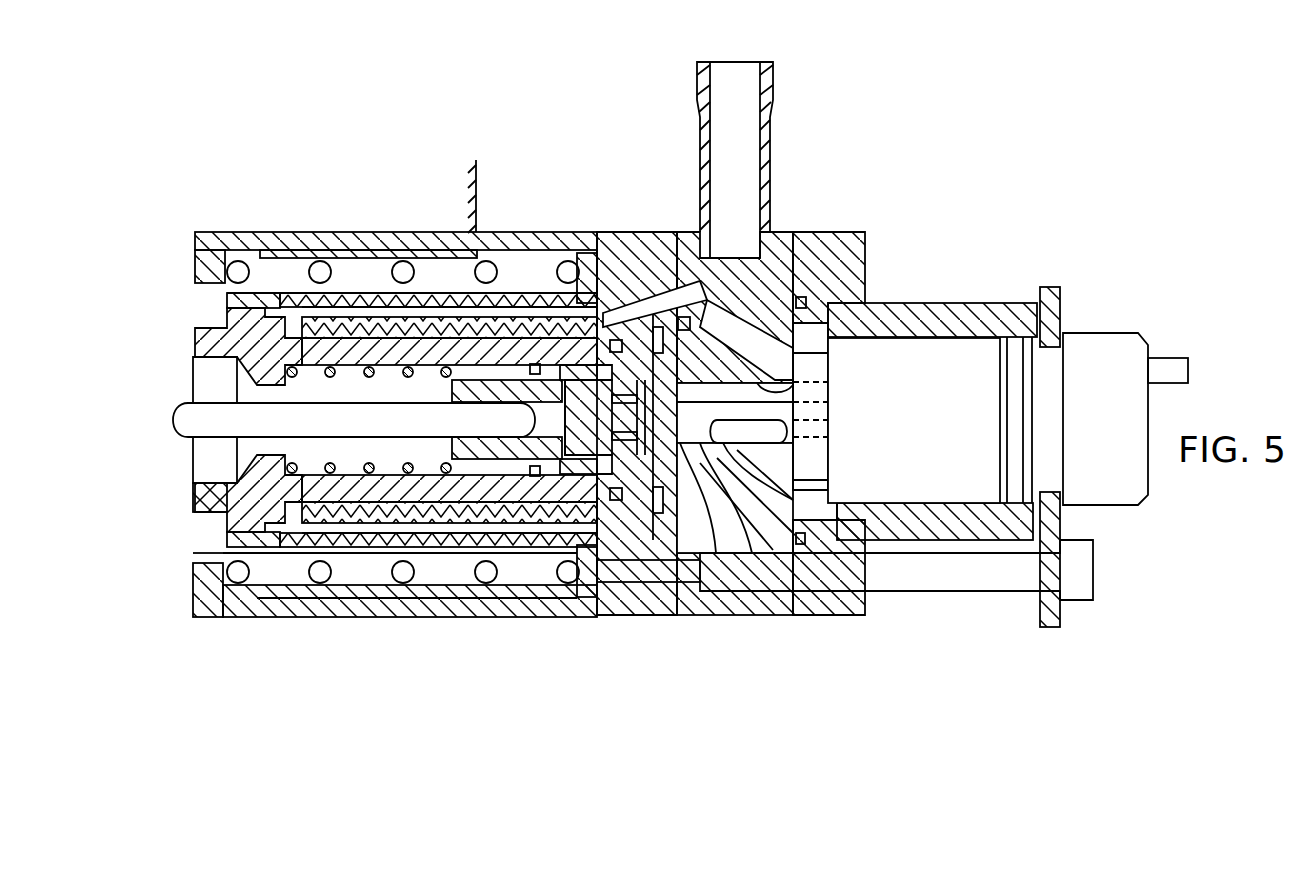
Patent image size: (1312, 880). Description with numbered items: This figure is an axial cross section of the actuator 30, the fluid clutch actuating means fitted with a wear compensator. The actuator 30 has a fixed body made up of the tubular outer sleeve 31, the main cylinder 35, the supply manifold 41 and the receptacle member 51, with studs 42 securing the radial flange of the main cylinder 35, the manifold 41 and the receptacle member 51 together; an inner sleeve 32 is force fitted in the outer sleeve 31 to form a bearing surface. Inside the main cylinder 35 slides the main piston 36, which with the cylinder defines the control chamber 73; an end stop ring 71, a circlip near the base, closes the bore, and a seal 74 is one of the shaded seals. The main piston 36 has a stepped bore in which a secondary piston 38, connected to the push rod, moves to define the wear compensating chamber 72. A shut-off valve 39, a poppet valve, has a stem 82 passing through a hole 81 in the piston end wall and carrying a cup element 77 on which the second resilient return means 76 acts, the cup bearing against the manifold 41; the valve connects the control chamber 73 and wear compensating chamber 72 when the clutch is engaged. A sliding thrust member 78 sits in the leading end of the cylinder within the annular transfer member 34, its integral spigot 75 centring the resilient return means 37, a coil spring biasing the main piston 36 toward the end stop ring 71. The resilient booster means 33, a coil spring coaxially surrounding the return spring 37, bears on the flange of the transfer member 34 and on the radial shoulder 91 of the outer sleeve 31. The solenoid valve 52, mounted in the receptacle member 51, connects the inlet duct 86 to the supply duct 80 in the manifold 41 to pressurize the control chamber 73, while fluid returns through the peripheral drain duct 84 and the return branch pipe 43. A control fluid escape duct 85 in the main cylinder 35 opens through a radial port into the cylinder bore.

The actuator 30 is at (258, 140).
The tubular outer sleeve 31 is at (217, 232).
The inner sleeve 32 is at (287, 600).
The resilient booster means 33 is at (550, 300).
The annular transfer member 34 is at (227, 308).
The main cylinder 35 is at (622, 282).
The main piston 36 is at (437, 497).
The resilient return means 37 is at (330, 467).
The secondary piston 38 is at (470, 374).
The shut-off valve 39 is at (618, 400).
The supply manifold 41 is at (785, 232).
The studs 42 is at (950, 592).
The return branch pipe 43 is at (778, 98).
The receptacle member 51 is at (858, 232).
The solenoid valve 52 is at (1093, 333).
The end stop ring 71 is at (667, 433).
The wear compensating chamber 72 is at (593, 403).
The control chamber 73 is at (660, 380).
The seal 74 is at (533, 467).
The spigot 75 is at (290, 352).
The second resilient return means 76 is at (683, 447).
The cup element 77 is at (733, 450).
The sliding thrust member 78 is at (200, 497).
The supply duct 80 is at (780, 387).
The hole 81 is at (703, 325).
The stem 82 is at (792, 433).
The peripheral drain duct 84 is at (820, 323).
The control fluid escape duct 85 is at (343, 320).
The inlet duct 86 is at (780, 437).
The radial shoulder 91 is at (193, 556).